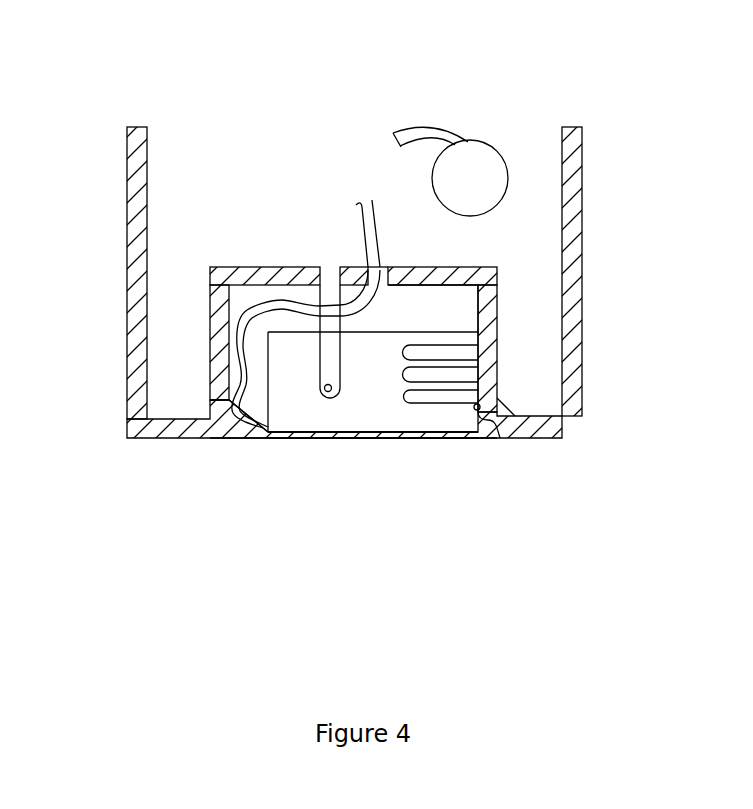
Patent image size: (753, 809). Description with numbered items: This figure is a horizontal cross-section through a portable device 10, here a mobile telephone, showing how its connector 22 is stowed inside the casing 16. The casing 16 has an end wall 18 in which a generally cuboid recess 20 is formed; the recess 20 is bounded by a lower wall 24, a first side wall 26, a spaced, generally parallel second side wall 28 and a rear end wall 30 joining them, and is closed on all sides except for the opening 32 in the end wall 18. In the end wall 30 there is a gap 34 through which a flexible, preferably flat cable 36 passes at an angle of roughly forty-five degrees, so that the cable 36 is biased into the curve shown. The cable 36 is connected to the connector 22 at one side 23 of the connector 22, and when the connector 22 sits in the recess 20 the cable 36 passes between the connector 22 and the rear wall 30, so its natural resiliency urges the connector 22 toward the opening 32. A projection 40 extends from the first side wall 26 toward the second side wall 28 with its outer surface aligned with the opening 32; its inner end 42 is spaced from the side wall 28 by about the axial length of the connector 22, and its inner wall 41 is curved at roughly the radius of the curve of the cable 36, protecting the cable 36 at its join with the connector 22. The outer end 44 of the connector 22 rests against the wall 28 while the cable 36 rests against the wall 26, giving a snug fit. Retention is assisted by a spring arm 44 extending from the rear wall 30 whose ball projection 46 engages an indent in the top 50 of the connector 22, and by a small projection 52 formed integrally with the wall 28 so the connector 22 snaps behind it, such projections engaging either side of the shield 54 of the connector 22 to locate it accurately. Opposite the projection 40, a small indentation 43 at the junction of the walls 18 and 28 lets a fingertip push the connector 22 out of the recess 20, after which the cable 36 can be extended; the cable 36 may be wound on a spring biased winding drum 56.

The portable device 10 is at (588, 166).
The casing 16 is at (572, 226).
The end wall 18 is at (548, 435).
The recess 20 is at (240, 298).
The connector 22 is at (355, 440).
The side of connector 23 is at (338, 440).
The lower wall 24 is at (400, 323).
The first side wall 26 is at (217, 374).
The second side wall 28 is at (487, 305).
The end wall 30 is at (268, 273).
The opening 32 is at (429, 440).
The gap 34 is at (388, 265).
The cable 36 is at (370, 263).
The projection 40 is at (250, 440).
The inner wall 41 is at (202, 438).
The inner end 42 is at (255, 440).
The indentation 43 is at (487, 430).
The spring arm 44 is at (333, 307).
The ball projection 46 is at (328, 392).
The top of connector 50 is at (375, 413).
The small projection 52 is at (483, 406).
The shield 54 is at (352, 386).
The spring biased winding drum 56 is at (483, 155).